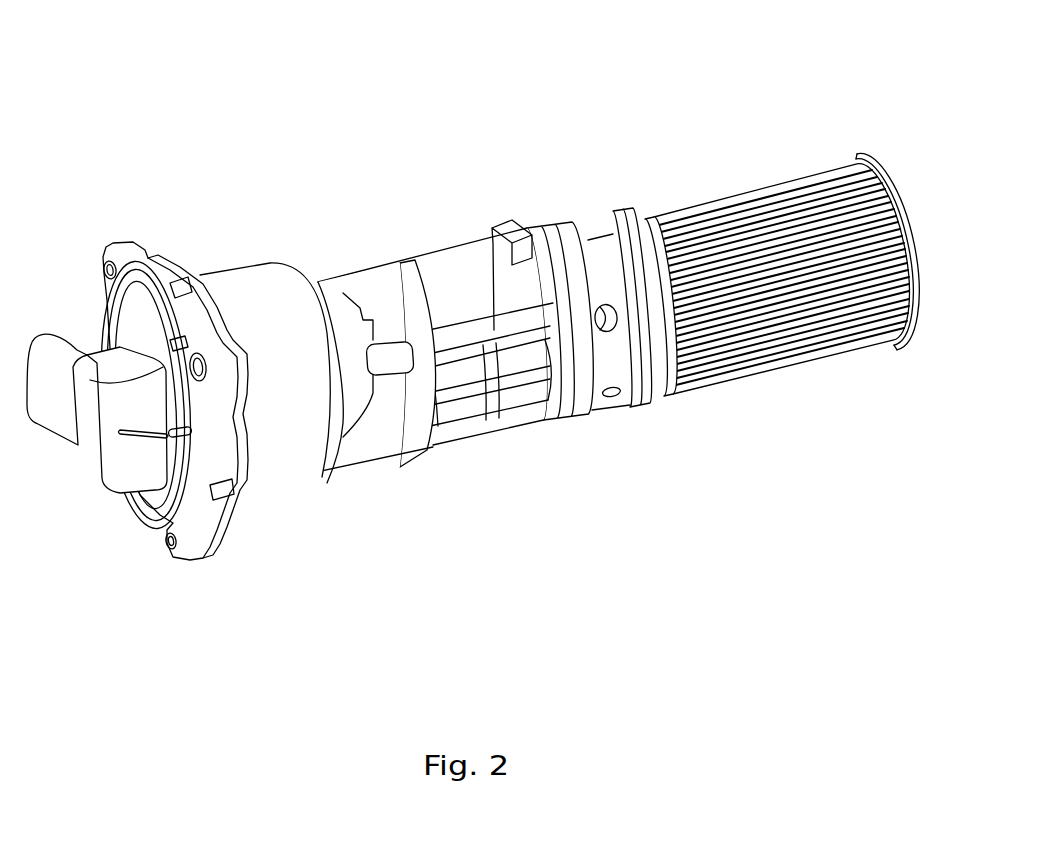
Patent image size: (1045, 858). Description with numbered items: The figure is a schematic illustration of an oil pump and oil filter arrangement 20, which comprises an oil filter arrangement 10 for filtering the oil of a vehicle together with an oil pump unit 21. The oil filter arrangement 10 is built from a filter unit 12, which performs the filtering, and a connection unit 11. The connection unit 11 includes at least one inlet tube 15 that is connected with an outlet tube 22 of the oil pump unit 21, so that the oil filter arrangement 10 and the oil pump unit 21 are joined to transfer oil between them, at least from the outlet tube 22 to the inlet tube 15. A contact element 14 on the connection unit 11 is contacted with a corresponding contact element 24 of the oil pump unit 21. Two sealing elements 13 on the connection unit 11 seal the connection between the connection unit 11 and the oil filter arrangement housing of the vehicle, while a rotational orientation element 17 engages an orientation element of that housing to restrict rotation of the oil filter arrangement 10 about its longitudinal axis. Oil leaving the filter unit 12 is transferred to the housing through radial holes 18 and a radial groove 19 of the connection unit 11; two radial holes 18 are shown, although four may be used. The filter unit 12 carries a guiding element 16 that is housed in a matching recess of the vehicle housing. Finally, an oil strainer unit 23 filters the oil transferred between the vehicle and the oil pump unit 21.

The oil filter arrangement 10 is at (473, 305).
The connection unit 11 is at (447, 352).
The filter unit 12 is at (723, 193).
The sealing elements 13 is at (540, 237).
The contact element 14 is at (448, 327).
The inlet tube 15 is at (400, 270).
The guiding element 16 is at (903, 233).
The rotational orientation element 17 is at (498, 389).
The radial holes 18 is at (616, 320).
The radial groove 19 is at (604, 401).
The oil pump and oil filter arrangement 20 is at (146, 320).
The oil pump unit 21 is at (265, 290).
The outlet tube 22 is at (363, 295).
The oil strainer unit 23 is at (462, 423).
The contact element 24 is at (392, 460).